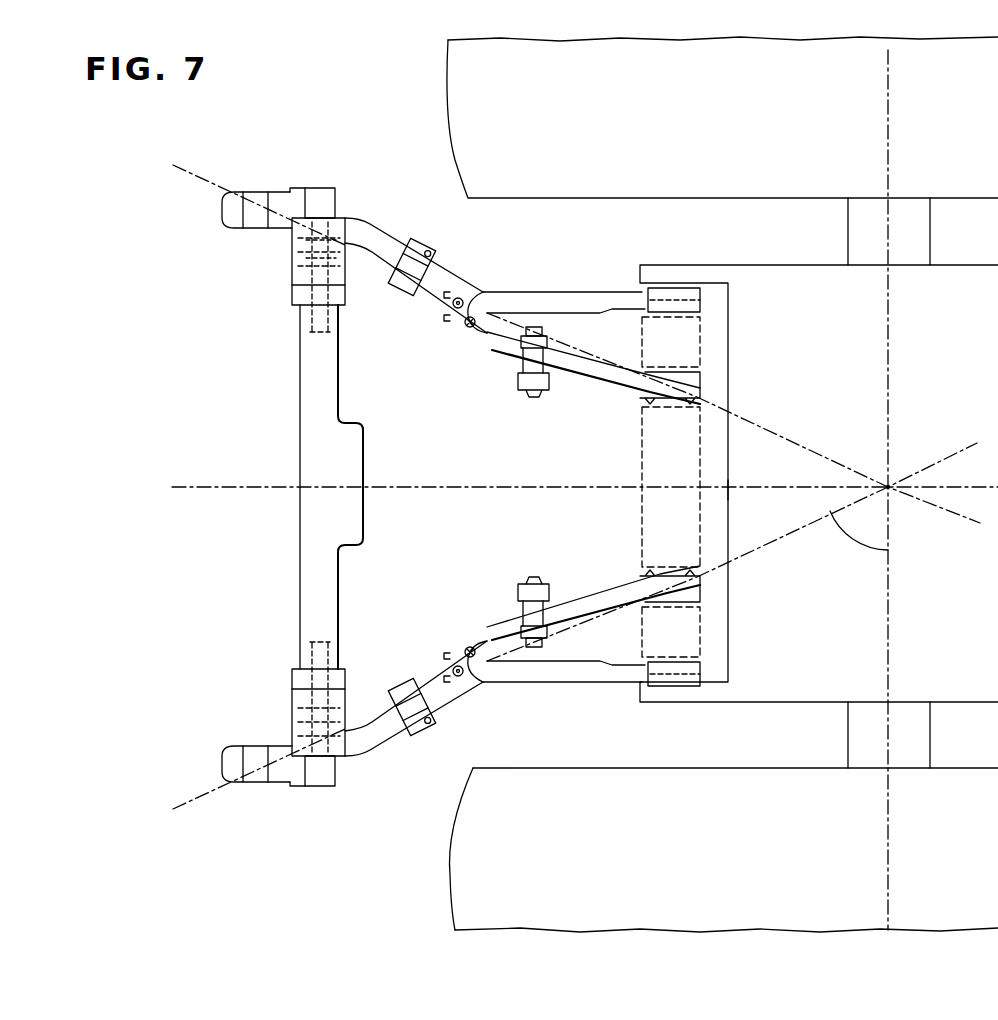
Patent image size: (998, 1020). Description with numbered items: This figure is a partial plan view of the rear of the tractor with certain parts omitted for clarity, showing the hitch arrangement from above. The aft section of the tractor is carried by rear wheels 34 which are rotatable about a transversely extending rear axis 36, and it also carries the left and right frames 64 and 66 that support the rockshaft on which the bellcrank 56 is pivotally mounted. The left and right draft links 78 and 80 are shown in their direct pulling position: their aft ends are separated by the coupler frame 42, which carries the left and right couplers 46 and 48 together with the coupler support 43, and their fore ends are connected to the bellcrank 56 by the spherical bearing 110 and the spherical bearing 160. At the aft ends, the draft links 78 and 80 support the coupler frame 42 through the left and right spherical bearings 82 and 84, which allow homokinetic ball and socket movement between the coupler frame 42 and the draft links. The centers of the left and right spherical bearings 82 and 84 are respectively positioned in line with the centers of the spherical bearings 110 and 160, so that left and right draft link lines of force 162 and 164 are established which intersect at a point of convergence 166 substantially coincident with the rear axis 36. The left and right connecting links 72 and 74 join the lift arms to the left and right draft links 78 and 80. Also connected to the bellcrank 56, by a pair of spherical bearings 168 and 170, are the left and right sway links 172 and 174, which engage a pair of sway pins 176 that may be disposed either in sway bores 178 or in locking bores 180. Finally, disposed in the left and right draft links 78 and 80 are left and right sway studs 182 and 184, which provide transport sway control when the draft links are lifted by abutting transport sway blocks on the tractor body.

The rear wheels 34 is at (782, 118).
The rear axis 36 is at (892, 379).
The coupler frame 42 is at (293, 297).
The coupler support 43 is at (315, 507).
The left coupler 46 is at (260, 195).
The right coupler 48 is at (267, 773).
The bellcrank 56 is at (690, 458).
The left frame 64 is at (682, 270).
The right frame 66 is at (683, 703).
The left connecting link 72 is at (418, 256).
The right connecting link 74 is at (400, 720).
The left draft link 78 is at (593, 373).
The right draft link 80 is at (612, 588).
The left spherical bearing 82 is at (298, 237).
The right spherical bearing 84 is at (300, 723).
The spherical bearing 110 is at (702, 375).
The spherical bearing 160 is at (704, 578).
The left draft link line of force 162 is at (800, 440).
The right draft link line of force 164 is at (888, 548).
The point of convergence 166 is at (897, 478).
The spherical bearing 168 is at (704, 298).
The spherical bearing 170 is at (704, 668).
The left sway link 172 is at (535, 300).
The right sway link 174 is at (573, 665).
The sway pins 176 is at (458, 312).
The sway bores 178 is at (453, 303).
The locking bores 180 is at (472, 328).
The left sway stud 182 is at (535, 395).
The right sway stud 184 is at (537, 570).